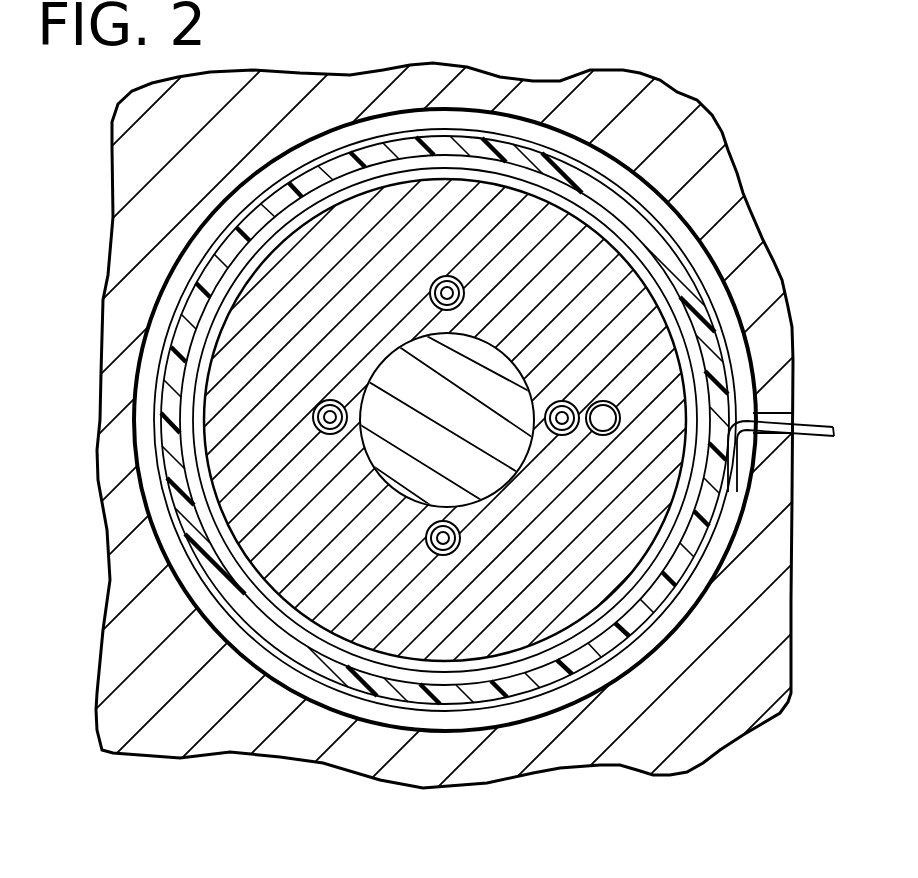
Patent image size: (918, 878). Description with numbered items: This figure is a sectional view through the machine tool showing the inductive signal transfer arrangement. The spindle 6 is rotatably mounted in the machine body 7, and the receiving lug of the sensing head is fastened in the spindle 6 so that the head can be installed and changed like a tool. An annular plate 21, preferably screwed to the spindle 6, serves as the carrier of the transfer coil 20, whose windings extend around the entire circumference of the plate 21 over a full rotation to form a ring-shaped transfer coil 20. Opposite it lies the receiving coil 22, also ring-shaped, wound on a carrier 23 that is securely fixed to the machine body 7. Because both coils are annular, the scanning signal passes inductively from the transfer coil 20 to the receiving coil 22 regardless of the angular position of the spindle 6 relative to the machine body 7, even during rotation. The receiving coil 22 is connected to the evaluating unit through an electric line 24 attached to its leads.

The spindle 6 is at (447, 439).
The machine body 7 is at (768, 330).
The transfer coil 20 is at (683, 472).
The annular plate 21 is at (608, 280).
The receiving coil 22 is at (700, 560).
The carrier 23 is at (642, 613).
The electric line 24 is at (820, 418).